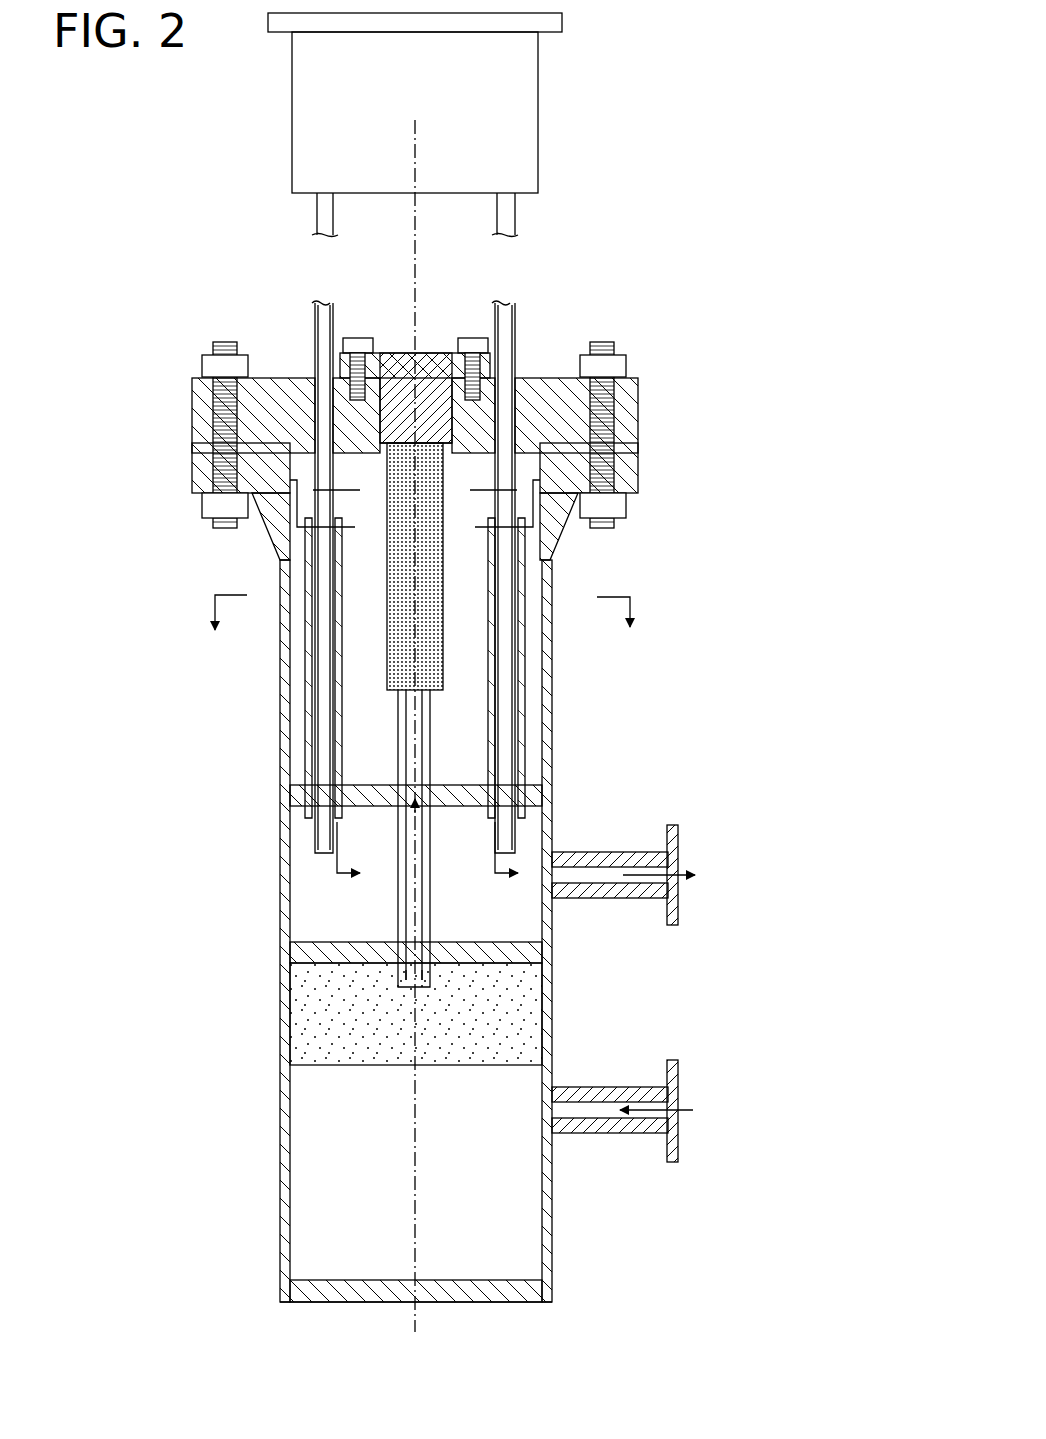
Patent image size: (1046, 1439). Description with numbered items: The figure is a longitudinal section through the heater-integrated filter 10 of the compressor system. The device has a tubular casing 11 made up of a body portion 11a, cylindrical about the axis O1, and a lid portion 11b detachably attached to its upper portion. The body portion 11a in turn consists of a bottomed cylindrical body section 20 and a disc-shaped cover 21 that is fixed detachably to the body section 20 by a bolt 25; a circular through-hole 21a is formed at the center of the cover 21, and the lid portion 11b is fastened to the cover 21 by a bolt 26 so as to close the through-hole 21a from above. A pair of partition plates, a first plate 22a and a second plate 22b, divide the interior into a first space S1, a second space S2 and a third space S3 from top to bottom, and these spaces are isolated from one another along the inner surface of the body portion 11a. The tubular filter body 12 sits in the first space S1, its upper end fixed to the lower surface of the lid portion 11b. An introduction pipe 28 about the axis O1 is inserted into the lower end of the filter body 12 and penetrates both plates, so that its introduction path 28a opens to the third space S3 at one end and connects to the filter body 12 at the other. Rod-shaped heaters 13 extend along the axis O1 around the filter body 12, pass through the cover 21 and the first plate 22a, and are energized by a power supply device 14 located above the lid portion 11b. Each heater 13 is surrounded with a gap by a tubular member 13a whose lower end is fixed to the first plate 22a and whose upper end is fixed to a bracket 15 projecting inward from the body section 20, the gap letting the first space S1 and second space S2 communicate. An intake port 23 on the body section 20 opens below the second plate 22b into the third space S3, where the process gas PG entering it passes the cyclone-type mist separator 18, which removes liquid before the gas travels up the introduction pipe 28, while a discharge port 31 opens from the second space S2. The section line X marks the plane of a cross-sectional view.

The heater-integrated filter 10 is at (672, 283).
The casing 11 is at (540, 400).
The body portion 11a is at (760, 393).
The lid portion 11b is at (487, 368).
The filter body 12 is at (432, 657).
The heater 13 is at (318, 325).
The tubular member 13a is at (522, 635).
The power supply device 14 is at (525, 122).
The bracket 15 is at (283, 548).
The mist separator 18 is at (515, 998).
The body section 20 is at (550, 570).
The cover 21 is at (630, 412).
The through-hole 21a is at (430, 395).
The first plate 22a is at (532, 793).
The second plate 22b is at (525, 955).
The intake port 23 is at (677, 1067).
The bolt 25 is at (218, 408).
The bolt 26 is at (470, 340).
The introduction pipe 28 is at (402, 828).
The introduction path 28a is at (407, 930).
The discharge port 31 is at (673, 905).
The axis O1 is at (417, 153).
The process gas PG is at (678, 872).
The first space S1 is at (381, 721).
The second space S2 is at (382, 917).
The third space S3 is at (380, 1136).
The cross section line X is at (423, 609).